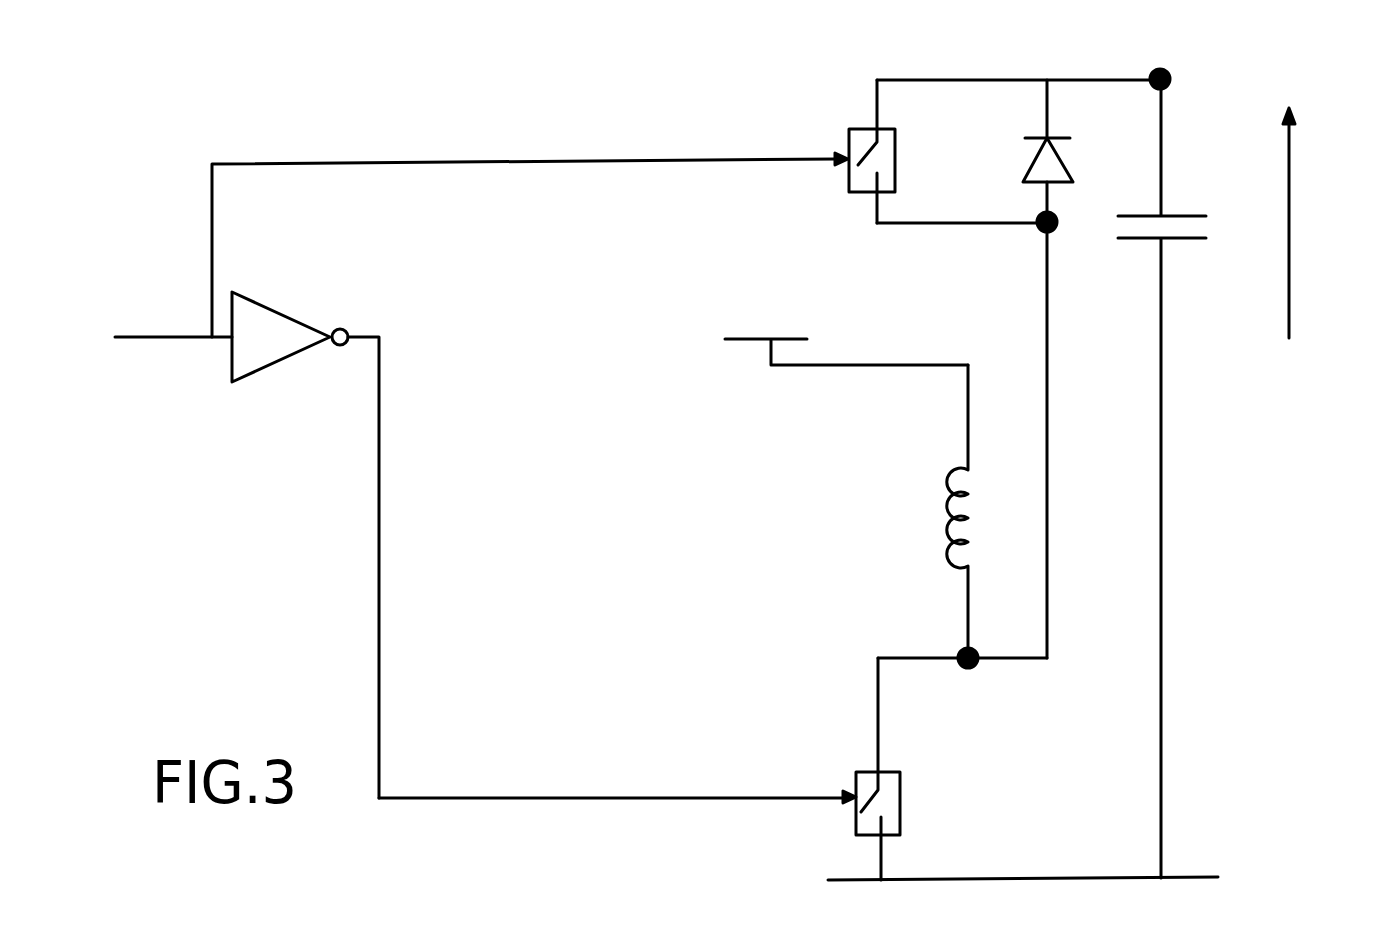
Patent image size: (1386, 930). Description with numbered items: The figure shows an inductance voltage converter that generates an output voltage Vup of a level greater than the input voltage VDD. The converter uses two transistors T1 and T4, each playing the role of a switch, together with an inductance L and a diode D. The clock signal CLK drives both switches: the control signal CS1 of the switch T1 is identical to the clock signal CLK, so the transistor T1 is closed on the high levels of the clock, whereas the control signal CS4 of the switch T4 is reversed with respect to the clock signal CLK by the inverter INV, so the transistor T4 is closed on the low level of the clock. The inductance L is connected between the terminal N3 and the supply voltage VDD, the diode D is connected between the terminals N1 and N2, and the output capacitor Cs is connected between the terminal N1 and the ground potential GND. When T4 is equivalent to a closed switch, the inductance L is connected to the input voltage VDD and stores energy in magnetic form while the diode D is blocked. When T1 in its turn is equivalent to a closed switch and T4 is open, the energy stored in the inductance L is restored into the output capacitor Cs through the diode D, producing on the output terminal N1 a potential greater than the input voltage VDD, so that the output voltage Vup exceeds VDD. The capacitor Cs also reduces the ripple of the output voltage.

The clock signal CLK is at (158, 337).
The inverter INV is at (292, 320).
The control signal CS1 is at (510, 159).
The transistor T1 is at (899, 151).
The output terminal N1 is at (1060, 77).
The diode D is at (1069, 151).
The terminal N2 is at (967, 435).
The output capacitor Cs is at (1173, 479).
The output voltage Vup is at (1324, 223).
The input voltage VDD is at (846, 332).
The inductance L is at (930, 511).
The terminal N3 is at (962, 681).
The control signal CS4 is at (515, 798).
The transistor T4 is at (908, 769).
The ground potential GND is at (1023, 901).